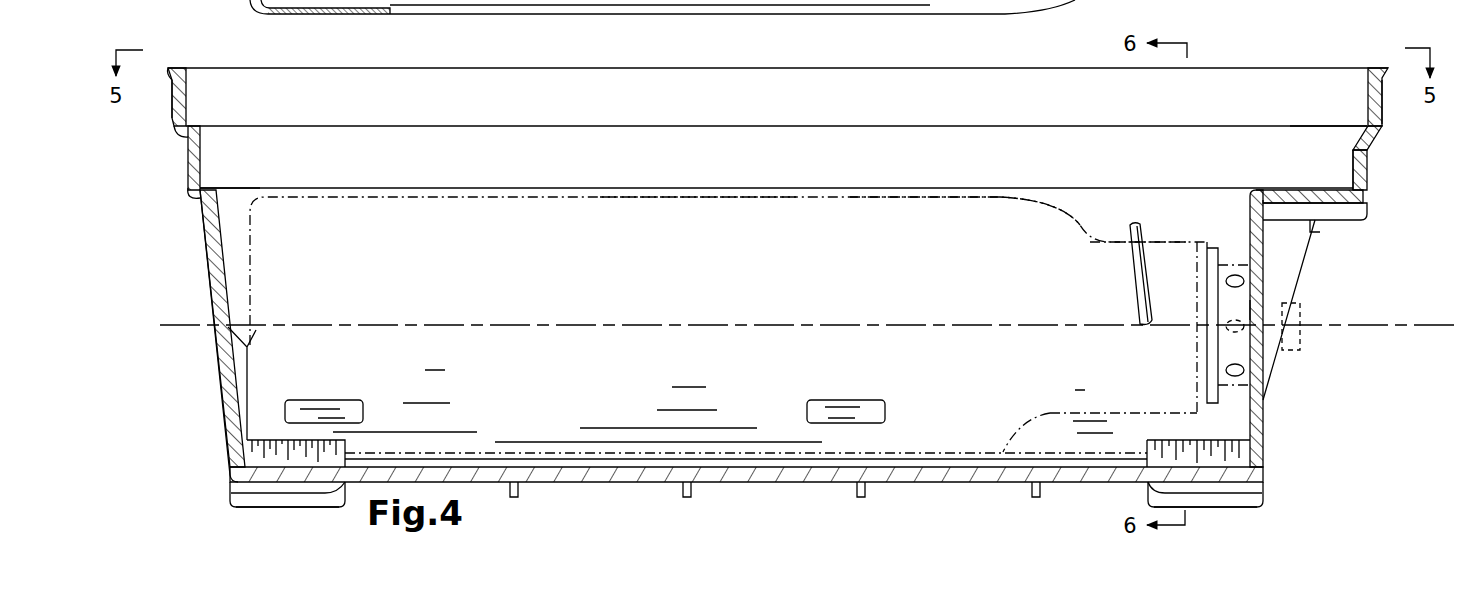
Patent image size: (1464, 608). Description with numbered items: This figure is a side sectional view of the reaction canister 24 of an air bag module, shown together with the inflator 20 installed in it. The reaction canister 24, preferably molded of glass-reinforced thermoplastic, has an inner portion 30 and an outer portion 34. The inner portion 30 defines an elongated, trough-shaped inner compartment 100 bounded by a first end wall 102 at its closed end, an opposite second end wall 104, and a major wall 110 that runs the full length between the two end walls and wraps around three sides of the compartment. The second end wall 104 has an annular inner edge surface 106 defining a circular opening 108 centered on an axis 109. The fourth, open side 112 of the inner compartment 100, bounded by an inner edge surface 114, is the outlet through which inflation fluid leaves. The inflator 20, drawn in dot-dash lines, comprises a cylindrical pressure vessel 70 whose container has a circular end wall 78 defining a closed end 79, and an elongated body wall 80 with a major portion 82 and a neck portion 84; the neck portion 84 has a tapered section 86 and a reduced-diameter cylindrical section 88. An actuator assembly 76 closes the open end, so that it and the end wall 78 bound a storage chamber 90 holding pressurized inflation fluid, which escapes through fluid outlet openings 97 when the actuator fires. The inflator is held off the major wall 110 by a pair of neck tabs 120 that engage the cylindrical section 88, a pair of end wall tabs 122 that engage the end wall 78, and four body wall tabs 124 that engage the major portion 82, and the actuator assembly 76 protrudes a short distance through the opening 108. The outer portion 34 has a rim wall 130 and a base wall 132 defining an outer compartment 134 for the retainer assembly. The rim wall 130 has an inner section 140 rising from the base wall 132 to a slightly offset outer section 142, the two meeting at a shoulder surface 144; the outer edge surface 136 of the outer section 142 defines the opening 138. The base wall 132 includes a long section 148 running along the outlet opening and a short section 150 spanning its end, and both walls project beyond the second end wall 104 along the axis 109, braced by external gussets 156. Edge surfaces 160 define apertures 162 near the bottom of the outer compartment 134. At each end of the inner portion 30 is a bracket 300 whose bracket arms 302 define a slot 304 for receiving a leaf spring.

The inflator 20 is at (632, 178).
The reaction canister 24 is at (160, 220).
The inner portion 30 is at (212, 385).
The outer portion 34 is at (166, 100).
The pressure vessel 70 is at (246, 275).
The actuator assembly 76 is at (1285, 300).
The end wall 78 is at (246, 312).
The closed end 79 is at (295, 11).
The body wall 80 is at (708, 220).
The major portion 82 is at (900, 225).
The neck portion 84 is at (1108, 250).
The tapered section 86 is at (1046, 205).
The cylindrical section 88 is at (1170, 248).
The storage chamber 90 is at (352, 8).
The fluid outlet openings 97 is at (826, 8).
The inner compartment 100 is at (805, 275).
The first end wall 102 is at (230, 445).
The second end wall 104 is at (1265, 438).
The inner edge surface 106 is at (1268, 390).
The opening 108 is at (1262, 305).
The axis 109 is at (1318, 326).
The major wall 110 is at (598, 483).
The open side 112 is at (470, 188).
The inner edge surface 114 is at (222, 190).
The neck tabs 120 is at (1132, 278).
The end wall tabs 122 is at (240, 358).
The body wall tabs 124 is at (326, 410).
The rim wall 130 is at (186, 92).
The base wall 132 is at (1290, 190).
The outer compartment 134 is at (675, 110).
The outer edge surface 136 is at (173, 68).
The opening 138 is at (372, 67).
The inner section 140 is at (1367, 174).
The outer section 142 is at (1385, 104).
The shoulder surface 144 is at (1356, 124).
The long section 148 is at (822, 190).
The short section 150 is at (1318, 188).
The external gussets 156 is at (514, 497).
The edge surfaces 160 is at (189, 152).
The apertures 162 is at (186, 180).
The brackets 300 is at (292, 508).
The bracket arms 302 is at (240, 503).
The slot 304 is at (226, 489).